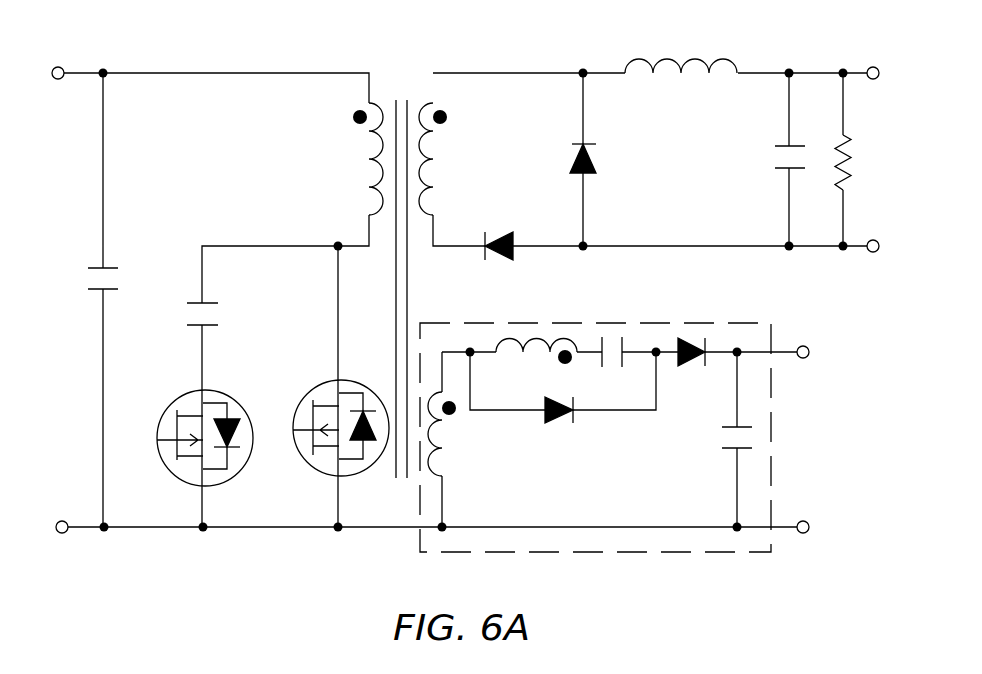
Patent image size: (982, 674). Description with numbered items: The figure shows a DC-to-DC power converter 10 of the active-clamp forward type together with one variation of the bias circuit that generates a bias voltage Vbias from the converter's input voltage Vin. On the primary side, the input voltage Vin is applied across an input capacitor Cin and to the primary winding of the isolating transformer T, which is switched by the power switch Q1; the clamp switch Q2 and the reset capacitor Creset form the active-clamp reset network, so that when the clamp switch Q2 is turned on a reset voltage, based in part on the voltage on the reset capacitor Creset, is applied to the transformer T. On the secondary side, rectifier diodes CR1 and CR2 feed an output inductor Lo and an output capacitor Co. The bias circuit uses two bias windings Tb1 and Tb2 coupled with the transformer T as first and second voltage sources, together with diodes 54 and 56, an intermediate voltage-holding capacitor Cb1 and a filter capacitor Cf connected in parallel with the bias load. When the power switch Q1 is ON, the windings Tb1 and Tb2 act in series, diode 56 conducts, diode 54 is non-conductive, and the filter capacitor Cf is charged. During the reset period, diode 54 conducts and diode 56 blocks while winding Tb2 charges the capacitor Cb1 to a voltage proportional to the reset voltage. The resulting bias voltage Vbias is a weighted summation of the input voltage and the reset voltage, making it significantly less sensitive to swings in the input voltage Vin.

The input voltage Vin is at (57, 67).
The power converter 10 is at (341, 28).
The isolating transformer T is at (418, 60).
The output inductor Lo is at (667, 58).
The freewheeling rectifier diode CR2 is at (595, 163).
The forward rectifier diode CR1 is at (497, 237).
The output capacitor Co is at (782, 148).
The input capacitor Cin is at (113, 267).
The reset capacitor Creset is at (210, 303).
The clamp switch Q2 is at (183, 392).
The power switch Q1 is at (312, 392).
The first bias winding Tb1 is at (432, 473).
The second bias winding Tb2 is at (538, 335).
The intermediate voltage-holding capacitor Cb1 is at (623, 338).
The diode 56 is at (698, 338).
The diode 54 is at (553, 424).
The filter capacitor Cf is at (733, 427).
The bias voltage Vbias is at (839, 348).